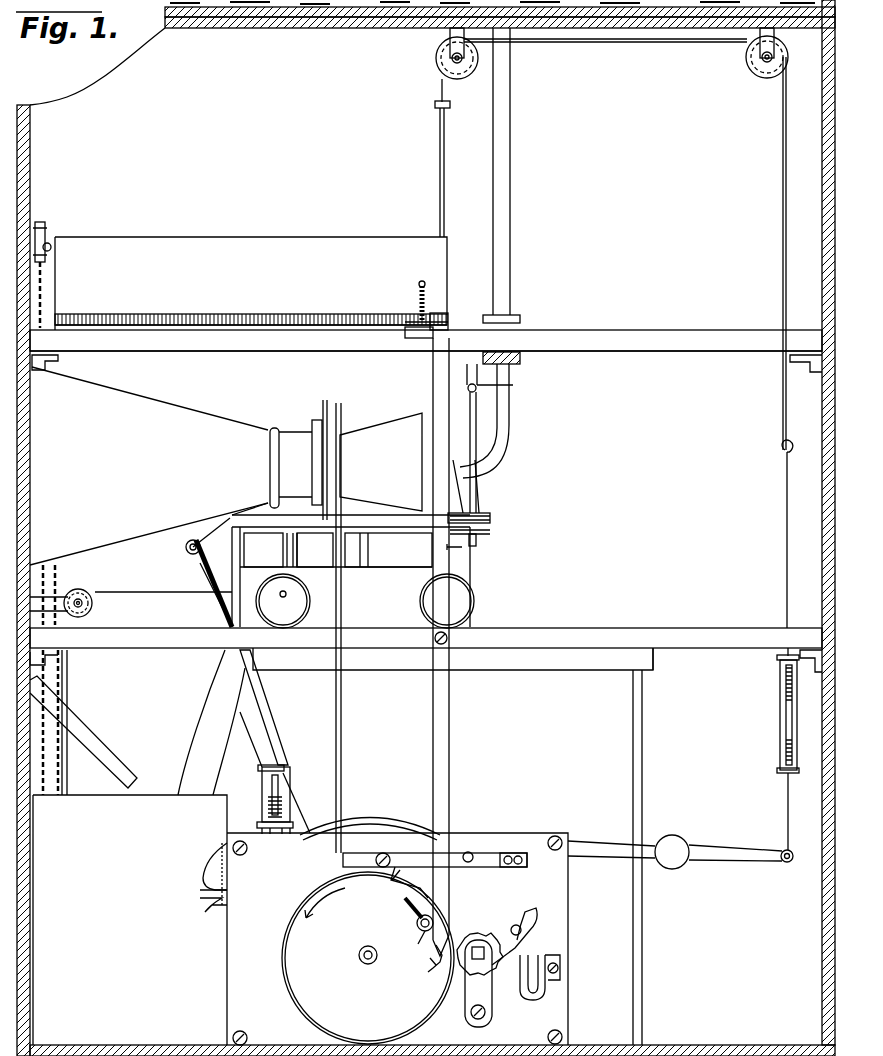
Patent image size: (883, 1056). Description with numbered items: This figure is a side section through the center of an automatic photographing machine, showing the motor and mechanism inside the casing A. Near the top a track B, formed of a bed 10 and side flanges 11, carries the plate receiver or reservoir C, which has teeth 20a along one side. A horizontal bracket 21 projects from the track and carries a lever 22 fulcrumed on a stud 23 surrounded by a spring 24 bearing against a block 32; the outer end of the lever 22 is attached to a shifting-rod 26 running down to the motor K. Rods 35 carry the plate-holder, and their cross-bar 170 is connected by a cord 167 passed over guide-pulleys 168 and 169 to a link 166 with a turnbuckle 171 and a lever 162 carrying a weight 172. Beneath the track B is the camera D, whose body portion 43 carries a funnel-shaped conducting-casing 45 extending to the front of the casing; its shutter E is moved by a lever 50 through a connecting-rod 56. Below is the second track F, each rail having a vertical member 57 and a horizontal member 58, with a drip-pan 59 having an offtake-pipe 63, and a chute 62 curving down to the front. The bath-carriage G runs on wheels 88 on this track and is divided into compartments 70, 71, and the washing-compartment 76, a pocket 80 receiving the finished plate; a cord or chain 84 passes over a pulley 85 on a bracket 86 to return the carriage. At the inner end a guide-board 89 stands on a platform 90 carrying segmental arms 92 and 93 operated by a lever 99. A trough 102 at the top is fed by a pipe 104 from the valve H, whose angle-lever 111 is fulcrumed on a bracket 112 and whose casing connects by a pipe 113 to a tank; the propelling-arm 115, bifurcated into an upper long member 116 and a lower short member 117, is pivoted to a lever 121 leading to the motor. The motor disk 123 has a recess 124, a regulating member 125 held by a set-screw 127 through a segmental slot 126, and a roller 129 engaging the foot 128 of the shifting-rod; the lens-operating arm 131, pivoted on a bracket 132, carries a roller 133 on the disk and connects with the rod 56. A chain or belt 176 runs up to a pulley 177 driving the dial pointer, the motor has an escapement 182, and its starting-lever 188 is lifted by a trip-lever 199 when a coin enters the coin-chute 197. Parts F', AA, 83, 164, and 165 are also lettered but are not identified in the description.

The casing A is at (30, 458).
The track B is at (426, 327).
The receiver or reservoir C is at (251, 283).
The camera D is at (228, 405).
The shutter E is at (330, 412).
The second track F is at (161, 622).
The lower beam F' is at (426, 622).
The bath-carriage G is at (380, 588).
The valve H is at (522, 360).
The motor K is at (262, 882).
The horn AA is at (381, 462).
The bed 10 is at (212, 352).
The side flanges 11 is at (668, 351).
The teeth 20a is at (282, 312).
The horizontal bracket 21 is at (418, 340).
The lever 22 is at (450, 330).
The stud 23 is at (418, 288).
The spring 24 is at (417, 302).
The shifting-rod 26 is at (432, 392).
The block 32 is at (447, 320).
The rods 35 is at (445, 198).
The body portion 43 is at (291, 468).
The conducting-casing 45 is at (149, 466).
The lever 50 is at (326, 424).
The connecting-rod 56 is at (343, 698).
The vertical member 57 is at (743, 648).
The horizontal member 58 is at (722, 648).
The pan 59 is at (453, 659).
The chute 62 is at (211, 722).
The offtake-pipe 63 is at (633, 795).
The compartment 70 is at (388, 550).
The compartment 71 is at (315, 550).
The washing-compartment 76 is at (270, 550).
The pocket 80 is at (226, 520).
The link 83 is at (210, 588).
The chain 84 is at (150, 592).
The pulley 85 is at (82, 590).
The bracket 86 is at (49, 605).
The wheels 88 is at (478, 600).
The guide-board 89 is at (468, 492).
The horizontal platform 90 is at (492, 521).
The segmental arm 92 is at (495, 512).
The segmental arm 93 is at (506, 511).
The lever 99 is at (494, 534).
The trough 102 is at (351, 515).
The pipe 104 is at (510, 430).
The angle-lever 111 is at (512, 386).
The bracket 112 is at (470, 370).
The pipe 113 is at (511, 195).
The propelling-arm 115 is at (186, 548).
The upper long member 116 is at (480, 543).
The lower short member 117 is at (465, 550).
The lever 121 is at (262, 730).
The disk 123 is at (368, 958).
The recess 124 is at (411, 882).
The movable member 125 is at (388, 896).
The segmental slot 126 is at (405, 905).
The set-screw 127 is at (420, 944).
The foot 128 is at (455, 980).
The roller 129 is at (432, 970).
The lens-operating arm 131 is at (383, 856).
The bracket 132 is at (510, 853).
The roller 133 is at (383, 860).
The lever 162 is at (725, 845).
The arched guide 164 is at (405, 812).
The rod 165 is at (305, 815).
The link 166 is at (787, 581).
The cord 167 is at (783, 251).
The guide-pulley 168 is at (750, 70).
The guide-pulley 169 is at (437, 66).
The cross-bar 170 is at (436, 108).
The turnbuckle 171 is at (778, 728).
The weight 172 is at (668, 846).
The chain or belt 176 is at (48, 230).
The pulley 177 is at (40, 225).
The escapement 182 is at (262, 808).
The starting-lever 188 is at (208, 880).
The coin-chute 197 is at (105, 762).
The trip-lever 199 is at (208, 895).